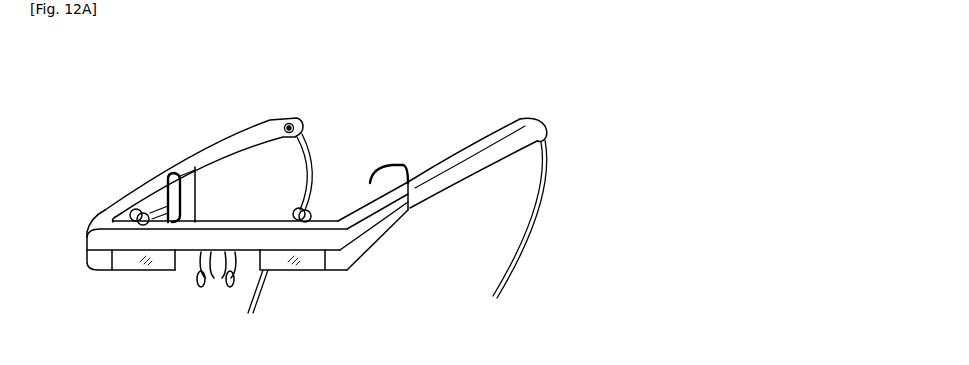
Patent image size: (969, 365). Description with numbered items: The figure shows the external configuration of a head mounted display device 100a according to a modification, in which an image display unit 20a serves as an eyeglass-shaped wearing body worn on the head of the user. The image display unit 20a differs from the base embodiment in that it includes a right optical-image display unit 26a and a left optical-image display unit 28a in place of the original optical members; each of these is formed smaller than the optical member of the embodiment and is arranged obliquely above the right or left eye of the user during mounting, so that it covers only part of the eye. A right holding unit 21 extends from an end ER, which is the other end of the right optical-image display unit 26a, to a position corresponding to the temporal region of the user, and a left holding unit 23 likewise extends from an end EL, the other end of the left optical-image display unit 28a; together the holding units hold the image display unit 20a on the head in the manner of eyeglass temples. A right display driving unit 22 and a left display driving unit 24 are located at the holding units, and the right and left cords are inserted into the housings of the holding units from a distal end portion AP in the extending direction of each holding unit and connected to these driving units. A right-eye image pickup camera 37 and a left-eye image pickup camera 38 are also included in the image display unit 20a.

The head mounted display device 100a is at (616, 114).
The image display unit 20a is at (304, 190).
The right holding unit 21 is at (218, 120).
The right display driving unit 22 is at (150, 202).
The left holding unit 23 is at (472, 116).
The left display driving unit 24 is at (357, 200).
The right optical-image display unit 26a is at (127, 273).
The left optical-image display unit 28a is at (284, 273).
The right-eye image pickup camera 37 is at (180, 203).
The left-eye image pickup camera 38 is at (308, 206).
The distal end portion AP is at (295, 122).
The end ER is at (95, 237).
The end EL is at (340, 238).